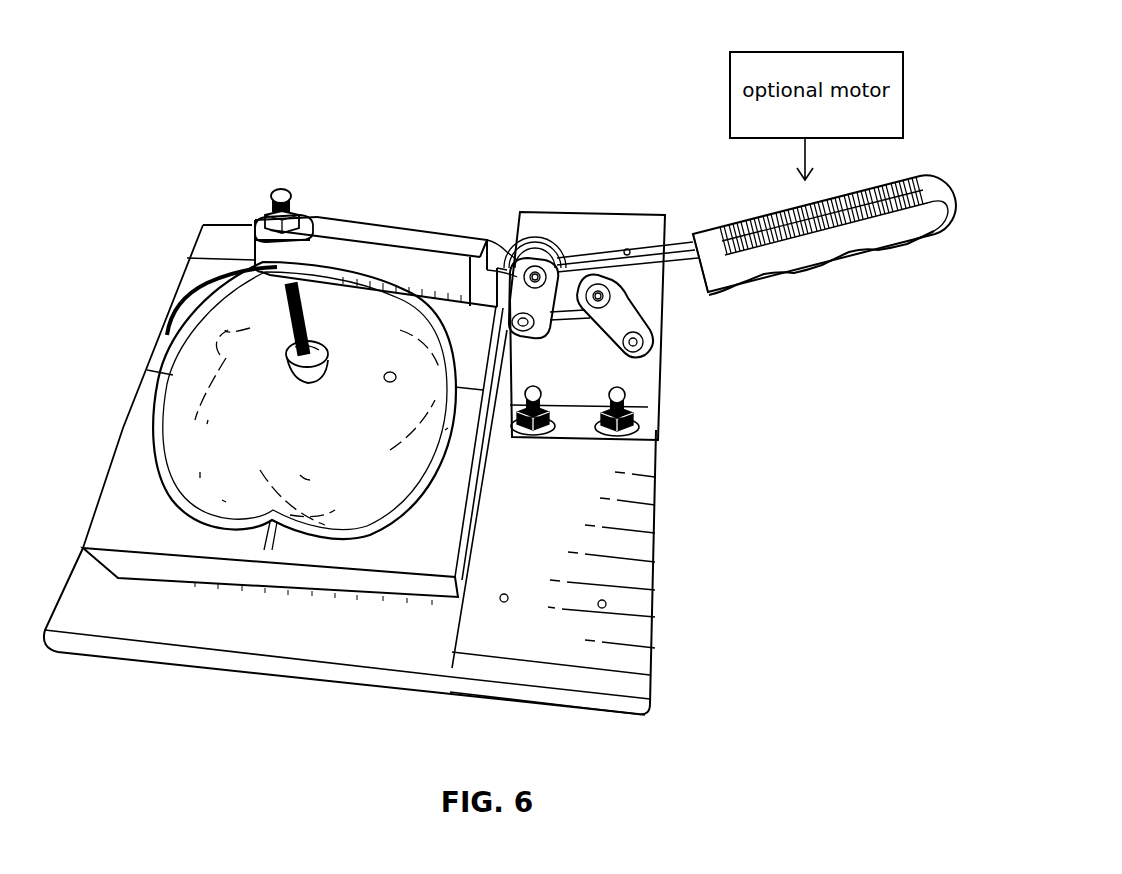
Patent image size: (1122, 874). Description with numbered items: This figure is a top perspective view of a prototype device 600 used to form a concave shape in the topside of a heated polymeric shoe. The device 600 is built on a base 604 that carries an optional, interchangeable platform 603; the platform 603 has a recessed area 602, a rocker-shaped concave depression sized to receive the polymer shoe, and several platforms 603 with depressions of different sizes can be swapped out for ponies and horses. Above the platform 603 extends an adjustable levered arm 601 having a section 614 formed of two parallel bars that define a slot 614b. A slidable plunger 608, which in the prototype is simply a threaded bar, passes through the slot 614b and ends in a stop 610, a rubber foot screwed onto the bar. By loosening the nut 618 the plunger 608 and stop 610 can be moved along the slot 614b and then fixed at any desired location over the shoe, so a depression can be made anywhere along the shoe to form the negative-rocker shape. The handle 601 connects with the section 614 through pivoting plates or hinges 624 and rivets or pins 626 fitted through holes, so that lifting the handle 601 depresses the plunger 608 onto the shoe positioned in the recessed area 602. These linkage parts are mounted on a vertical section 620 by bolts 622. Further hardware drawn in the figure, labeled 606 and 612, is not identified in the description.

The device 600 is at (245, 122).
The adjustable levered arm 601 is at (750, 290).
The recessed area 602 is at (223, 357).
The platform 603 is at (180, 568).
The base 604 is at (345, 675).
The link plate 606 is at (535, 277).
The slidable plunger 608 is at (310, 315).
The stop 610 is at (307, 387).
The bolt 612 is at (303, 198).
The section 614 is at (372, 220).
The slot 614b is at (418, 250).
The nut 618 is at (263, 214).
The vertical section 620 is at (637, 378).
The bolts 622 is at (640, 437).
The pivoting plates or hinges 624 is at (630, 315).
The rivets or pins 626 is at (600, 292).